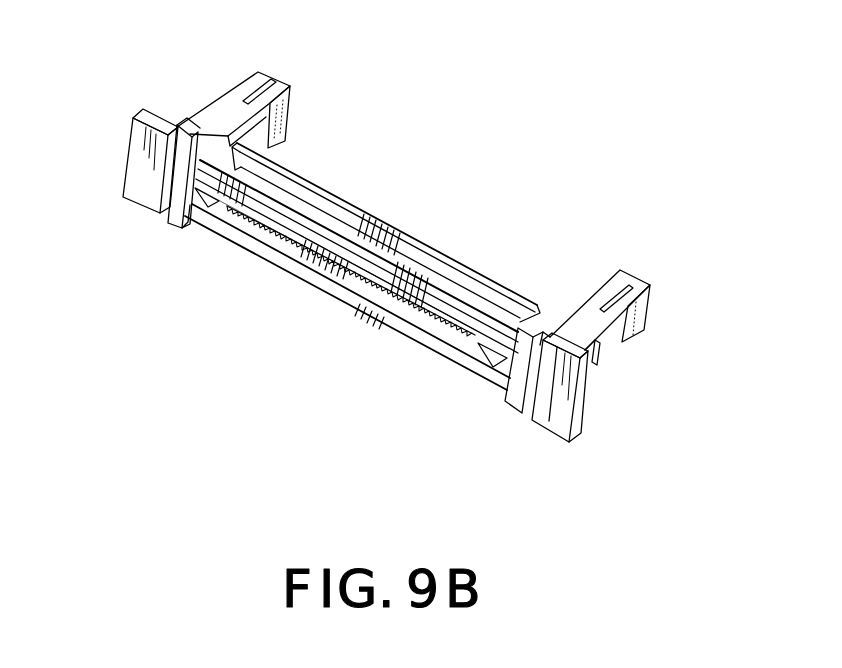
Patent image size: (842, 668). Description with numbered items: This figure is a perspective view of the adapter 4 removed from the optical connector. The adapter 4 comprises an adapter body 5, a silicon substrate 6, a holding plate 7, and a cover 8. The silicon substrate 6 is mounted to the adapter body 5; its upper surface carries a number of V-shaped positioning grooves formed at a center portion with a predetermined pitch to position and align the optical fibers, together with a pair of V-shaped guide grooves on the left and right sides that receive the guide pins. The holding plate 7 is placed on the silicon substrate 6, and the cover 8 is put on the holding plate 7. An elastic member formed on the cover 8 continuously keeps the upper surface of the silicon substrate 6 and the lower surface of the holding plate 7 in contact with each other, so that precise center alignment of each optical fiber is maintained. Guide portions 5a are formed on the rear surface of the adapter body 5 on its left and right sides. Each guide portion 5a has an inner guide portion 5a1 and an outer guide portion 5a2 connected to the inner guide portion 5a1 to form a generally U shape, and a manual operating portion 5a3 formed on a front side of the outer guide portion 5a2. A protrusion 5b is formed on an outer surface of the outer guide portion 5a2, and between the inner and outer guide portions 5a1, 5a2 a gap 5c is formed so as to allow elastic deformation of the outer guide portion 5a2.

The adapter 4 is at (302, 288).
The adapter body 5 is at (247, 248).
The guide portion 5a is at (207, 103).
The inner guide portion 5a1 is at (270, 148).
The outer guide portion 5a2 is at (278, 115).
The manual operating portion 5a3 is at (140, 198).
The protrusion 5b is at (598, 364).
The gap 5c is at (162, 215).
The silicon substrate 6 is at (348, 283).
The holding plate 7 is at (413, 308).
The cover 8 is at (467, 313).